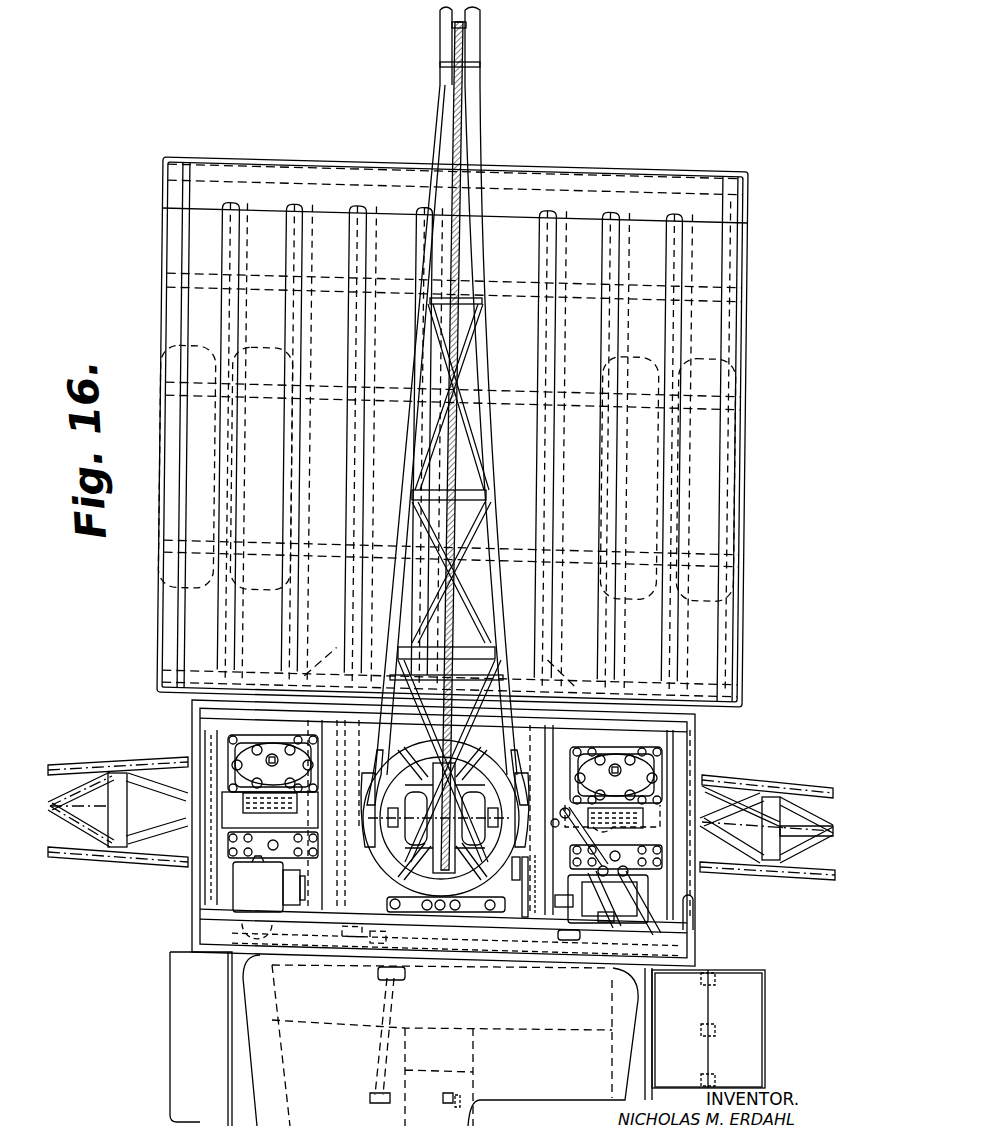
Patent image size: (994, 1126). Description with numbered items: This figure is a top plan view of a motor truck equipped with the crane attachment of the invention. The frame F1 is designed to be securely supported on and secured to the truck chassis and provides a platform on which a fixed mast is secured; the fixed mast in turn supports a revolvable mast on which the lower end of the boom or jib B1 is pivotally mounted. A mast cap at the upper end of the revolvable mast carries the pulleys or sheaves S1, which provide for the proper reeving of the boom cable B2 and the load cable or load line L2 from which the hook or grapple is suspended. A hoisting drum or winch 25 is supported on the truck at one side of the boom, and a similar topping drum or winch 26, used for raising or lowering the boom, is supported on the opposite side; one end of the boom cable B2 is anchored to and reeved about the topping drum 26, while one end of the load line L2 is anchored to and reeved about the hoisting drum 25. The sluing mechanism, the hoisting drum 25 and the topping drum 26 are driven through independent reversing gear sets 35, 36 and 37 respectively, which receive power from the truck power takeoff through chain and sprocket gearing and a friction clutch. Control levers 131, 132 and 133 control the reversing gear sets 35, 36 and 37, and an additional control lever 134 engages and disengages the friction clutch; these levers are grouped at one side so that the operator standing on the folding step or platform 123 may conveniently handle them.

The boom cable B2 is at (455, 153).
The boom or jib B1 is at (492, 474).
The frame F1 is at (678, 742).
The topping drum or winch 26 is at (257, 826).
The reversing gear set 37 is at (250, 890).
The pulleys or sheaves S1 is at (447, 818).
The hoisting drum or winch 25 is at (653, 817).
The load cable or load line L2 is at (697, 827).
The reversing gear set 36 is at (640, 887).
The control lever 132 is at (647, 907).
The control lever 134 is at (688, 925).
The reversing gear set 35 is at (563, 900).
The control lever 133 is at (568, 935).
The control lever 131 is at (607, 917).
The folding step or platform 123 is at (747, 1030).